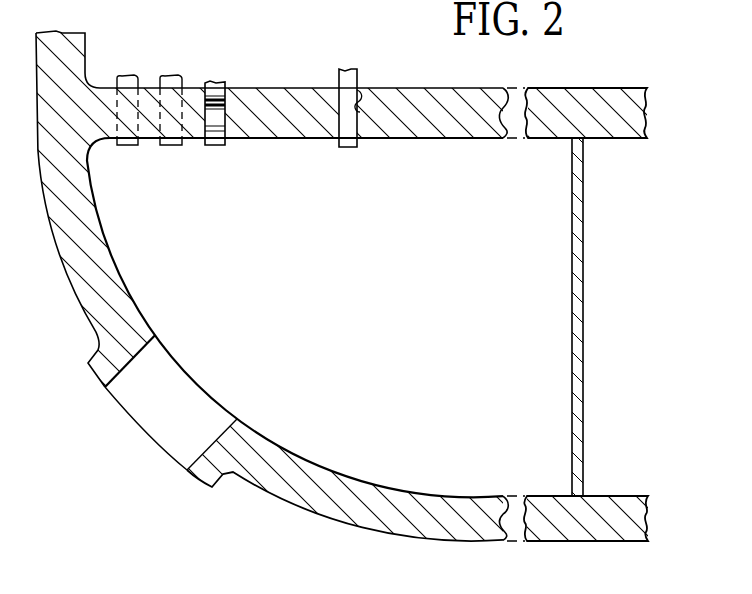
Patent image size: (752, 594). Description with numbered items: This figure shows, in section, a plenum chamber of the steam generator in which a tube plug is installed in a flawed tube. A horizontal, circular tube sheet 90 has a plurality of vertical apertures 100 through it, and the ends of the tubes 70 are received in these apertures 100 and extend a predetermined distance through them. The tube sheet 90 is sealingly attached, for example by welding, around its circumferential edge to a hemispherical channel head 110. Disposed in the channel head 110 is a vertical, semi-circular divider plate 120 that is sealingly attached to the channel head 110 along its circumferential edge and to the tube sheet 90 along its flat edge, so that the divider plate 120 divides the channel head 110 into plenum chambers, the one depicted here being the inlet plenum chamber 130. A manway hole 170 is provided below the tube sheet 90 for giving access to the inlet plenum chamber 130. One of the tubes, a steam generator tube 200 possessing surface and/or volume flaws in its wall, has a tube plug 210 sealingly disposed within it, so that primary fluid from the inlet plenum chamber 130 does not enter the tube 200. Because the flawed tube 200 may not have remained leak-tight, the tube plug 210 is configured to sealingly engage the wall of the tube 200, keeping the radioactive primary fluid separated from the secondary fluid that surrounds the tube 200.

The tubes 70 is at (128, 77).
The tube sheet 90 is at (607, 112).
The apertures 100 is at (358, 88).
The channel head 110 is at (287, 487).
The divider plate 120 is at (573, 265).
The inlet plenum chamber 130 is at (522, 235).
The manway holes 170 is at (172, 458).
The steam generator tube 200 is at (222, 82).
The tube plug 210 is at (213, 153).